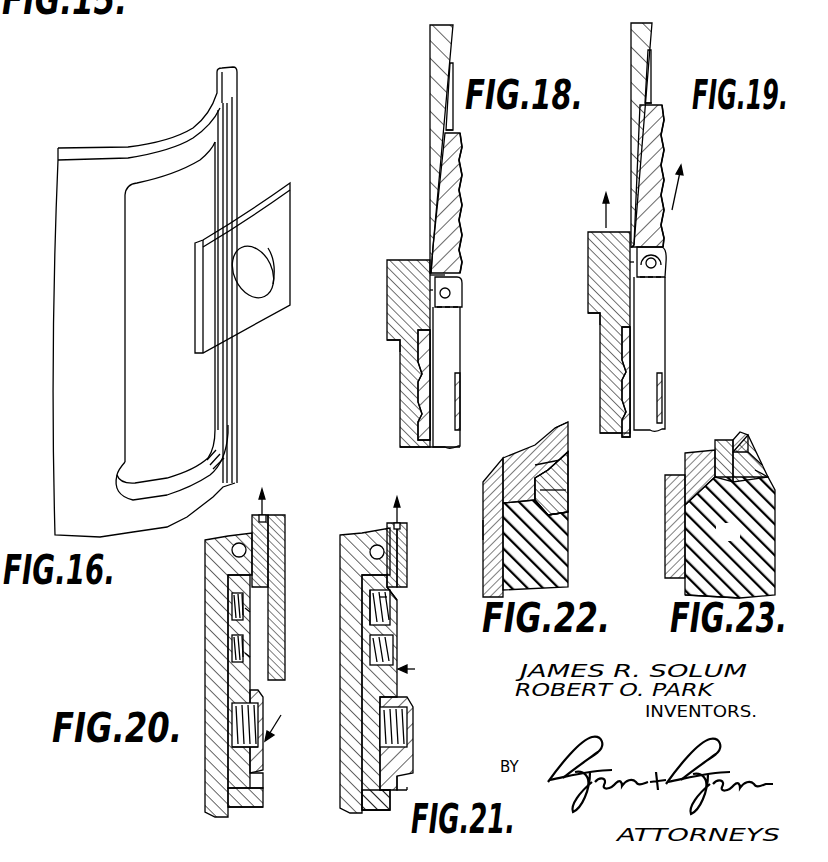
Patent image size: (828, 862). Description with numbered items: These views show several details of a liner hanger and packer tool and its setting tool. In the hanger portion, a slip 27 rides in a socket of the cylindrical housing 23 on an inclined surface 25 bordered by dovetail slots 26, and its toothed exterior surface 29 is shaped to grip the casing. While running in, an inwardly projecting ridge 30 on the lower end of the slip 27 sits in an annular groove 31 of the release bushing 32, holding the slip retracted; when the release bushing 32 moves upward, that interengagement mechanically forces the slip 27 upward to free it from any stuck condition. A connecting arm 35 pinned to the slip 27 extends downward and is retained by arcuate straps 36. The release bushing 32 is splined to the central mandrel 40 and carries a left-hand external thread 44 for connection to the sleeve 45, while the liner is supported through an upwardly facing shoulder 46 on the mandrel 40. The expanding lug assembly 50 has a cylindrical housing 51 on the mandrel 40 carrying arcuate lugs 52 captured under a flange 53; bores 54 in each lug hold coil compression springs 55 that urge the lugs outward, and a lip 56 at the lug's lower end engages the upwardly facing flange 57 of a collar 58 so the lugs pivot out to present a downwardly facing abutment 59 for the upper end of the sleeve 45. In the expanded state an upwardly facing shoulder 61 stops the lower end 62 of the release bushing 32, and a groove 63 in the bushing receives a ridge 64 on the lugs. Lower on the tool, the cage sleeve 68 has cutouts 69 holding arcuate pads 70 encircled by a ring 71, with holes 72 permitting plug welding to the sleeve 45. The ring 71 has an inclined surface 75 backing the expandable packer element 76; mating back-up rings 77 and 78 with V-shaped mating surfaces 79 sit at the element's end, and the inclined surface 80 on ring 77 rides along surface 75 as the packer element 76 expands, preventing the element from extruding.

In FIG. 18, the housing 23 is at (443, 76).
In FIG. 19, the housing 23 is at (652, 39).
In FIG. 18, the inclined surface 25 is at (452, 96).
In FIG. 19, the inclined surface 25 is at (650, 90).
In FIG. 18, the dovetail slots 26 is at (454, 128).
In FIG. 19, the dovetail slots 26 is at (654, 100).
In FIG. 18, the slip 27 is at (450, 205).
In FIG. 19, the slip 27 is at (651, 143).
In FIG. 18, the toothed exterior surface 29 is at (462, 178).
In FIG. 19, the toothed exterior surface 29 is at (665, 230).
In FIG. 18, the ridge 30 is at (430, 271).
In FIG. 19, the ridge 30 is at (665, 272).
In FIG. 18, the annular groove 31 is at (429, 300).
In FIG. 19, the annular groove 31 is at (627, 276).
In FIG. 18, the release bushing 32 is at (400, 292).
In FIG. 19, the release bushing 32 is at (597, 268).
In FIG. 20, the release bushing 32 is at (272, 513).
In FIG. 21, the release bushing 32 is at (404, 525).
In FIG. 18, the connecting arm 35 is at (446, 420).
In FIG. 19, the connecting arm 35 is at (651, 333).
In FIG. 18, the arcuate straps 36 is at (462, 382).
In FIG. 19, the arcuate straps 36 is at (663, 373).
In FIG. 20, the mandrel 40 is at (211, 558).
In FIG. 21, the mandrel 40 is at (346, 631).
In FIG. 18, the left-hand external thread 44 is at (418, 400).
In FIG. 19, the left-hand external thread 44 is at (622, 372).
In FIG. 20, the left-hand external thread 44 is at (284, 529).
In FIG. 21, the left-hand external thread 44 is at (408, 551).
In FIG. 18, the sleeve 45 is at (427, 445).
In FIG. 19, the sleeve 45 is at (627, 417).
In FIG. 22, the sleeve 45 is at (485, 527).
In FIG. 23, the sleeve 45 is at (668, 564).
In FIG. 20, the sleeve 45 is at (282, 558).
In FIG. 21, the sleeve 45 is at (409, 536).
In FIG. 18, the upwardly facing shoulder 46 is at (397, 342).
In FIG. 19, the upwardly facing shoulder 46 is at (597, 314).
In FIG. 20, the expanding lug assembly 50 is at (287, 720).
In FIG. 21, the expanding lug assembly 50 is at (420, 665).
In FIG. 20, the cylindrical housing 51 is at (229, 625).
In FIG. 21, the cylindrical housing 51 is at (366, 687).
In FIG. 20, the lugs 52 is at (256, 760).
In FIG. 21, the lugs 52 is at (414, 752).
In FIG. 20, the flange 53 is at (237, 581).
In FIG. 21, the flange 53 is at (369, 589).
In FIG. 20, the bores 54 is at (231, 646).
In FIG. 20, the coil compression springs 55 is at (236, 737).
In FIG. 21, the coil compression springs 55 is at (380, 729).
In FIG. 20, the lip 56 is at (245, 790).
In FIG. 21, the lip 56 is at (388, 804).
In FIG. 20, the flange 57 is at (253, 782).
In FIG. 21, the flange 57 is at (403, 784).
In FIG. 20, the collar 58 is at (259, 794).
In FIG. 21, the collar 58 is at (368, 804).
In FIG. 21, the abutment 59 is at (400, 777).
In FIG. 21, the upwardly facing shoulder 61 is at (392, 595).
In FIG. 21, the lower end 62 is at (394, 593).
In FIG. 20, the groove 63 is at (252, 617).
In FIG. 21, the groove 63 is at (380, 607).
In FIG. 20, the ridge 64 is at (251, 653).
In FIG. 21, the ridge 64 is at (396, 650).
In FIG. 16, the cage sleeve 68 is at (98, 160).
In FIG. 16, the cutouts 69 is at (124, 390).
In FIG. 16, the arcuate pads 70 is at (285, 230).
In FIG. 22, the arcuate pads 70 is at (518, 462).
In FIG. 23, the arcuate pads 70 is at (697, 451).
In FIG. 22, the ring 71 is at (562, 432).
In FIG. 23, the ring 71 is at (740, 433).
In FIG. 16, the holes 72 is at (270, 270).
In FIG. 22, the inclined surfaces 75 is at (562, 458).
In FIG. 23, the inclined surfaces 75 is at (752, 445).
In FIG. 22, the packer element 76 is at (560, 557).
In FIG. 23, the packer element 76 is at (706, 590).
In FIG. 22, the back-up ring 77 is at (562, 488).
In FIG. 23, the back-up ring 77 is at (755, 455).
In FIG. 22, the back-up ring 78 is at (563, 517).
In FIG. 23, the back-up ring 78 is at (762, 467).
In FIG. 22, the mating surfaces 79 is at (562, 510).
In FIG. 23, the mating surfaces 79 is at (730, 537).
In FIG. 22, the inclined surface 80 is at (558, 467).
In FIG. 23, the inclined surface 80 is at (728, 438).